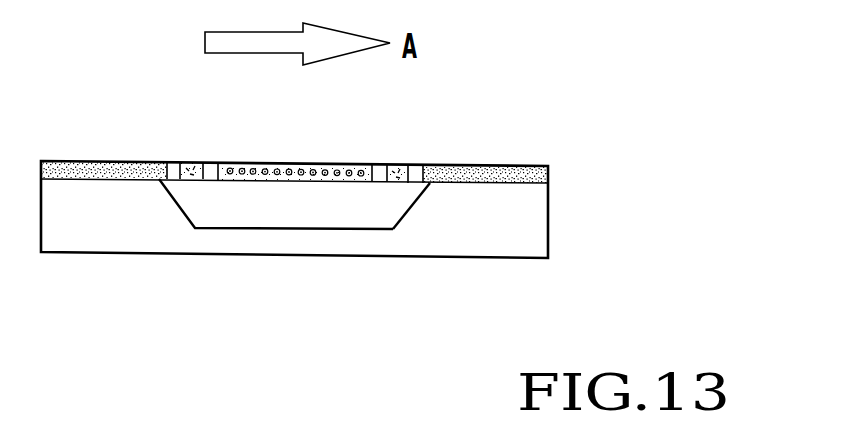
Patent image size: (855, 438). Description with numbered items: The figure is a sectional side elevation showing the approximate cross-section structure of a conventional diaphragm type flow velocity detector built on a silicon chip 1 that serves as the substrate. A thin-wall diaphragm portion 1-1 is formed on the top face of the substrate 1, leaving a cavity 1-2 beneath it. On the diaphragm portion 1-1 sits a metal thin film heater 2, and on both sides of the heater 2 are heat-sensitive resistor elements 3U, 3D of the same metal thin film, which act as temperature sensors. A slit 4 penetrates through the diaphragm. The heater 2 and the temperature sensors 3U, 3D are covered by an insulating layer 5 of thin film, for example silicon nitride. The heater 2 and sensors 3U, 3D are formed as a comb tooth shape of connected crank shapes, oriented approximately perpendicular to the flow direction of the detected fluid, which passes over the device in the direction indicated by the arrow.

The silicon chip 1 is at (120, 237).
The diaphragm portion 1-1 is at (317, 183).
The cavity 1-2 is at (368, 220).
The heater 2 is at (297, 165).
The heat-sensitive resistor element 3U is at (240, 170).
The heat-sensitive resistor element 3D is at (350, 165).
The slit 4 is at (210, 180).
The insulating layer 5 is at (261, 181).